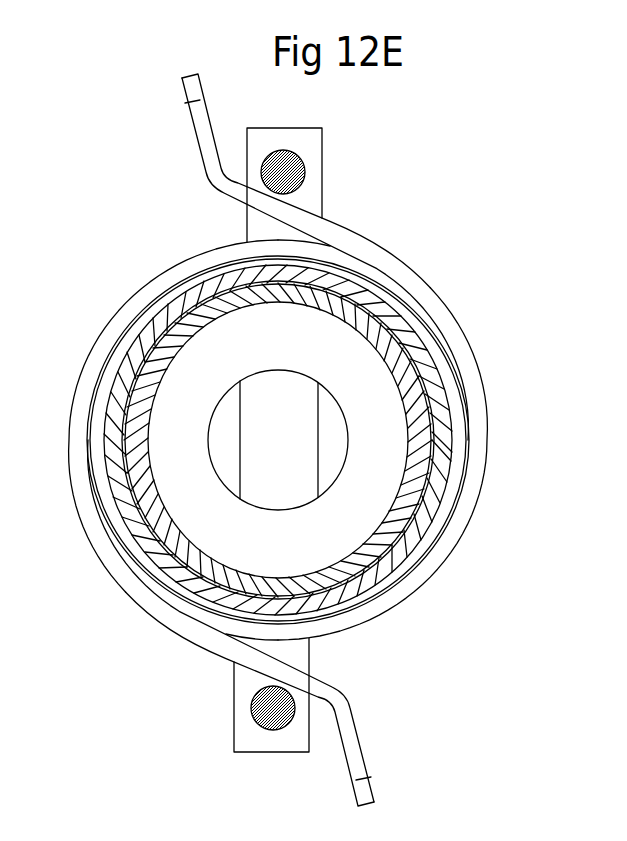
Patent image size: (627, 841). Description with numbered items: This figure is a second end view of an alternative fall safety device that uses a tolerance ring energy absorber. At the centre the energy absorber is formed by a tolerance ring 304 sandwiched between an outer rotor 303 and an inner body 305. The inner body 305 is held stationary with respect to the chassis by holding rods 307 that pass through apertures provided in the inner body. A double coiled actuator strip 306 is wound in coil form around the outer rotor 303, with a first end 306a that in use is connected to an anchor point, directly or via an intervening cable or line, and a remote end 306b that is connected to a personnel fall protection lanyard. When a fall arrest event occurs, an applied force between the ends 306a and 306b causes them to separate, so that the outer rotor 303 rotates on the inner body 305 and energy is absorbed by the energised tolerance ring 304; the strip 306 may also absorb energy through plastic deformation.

The outer rotor 303 is at (438, 368).
The tolerance ring 304 is at (168, 327).
The inner body 305 is at (413, 518).
The double coiled actuator strip 306 is at (478, 437).
The first end of the actuator strip 306a is at (197, 118).
The remote end of the actuator strip 306b is at (352, 745).
The holding rods 307 is at (300, 453).